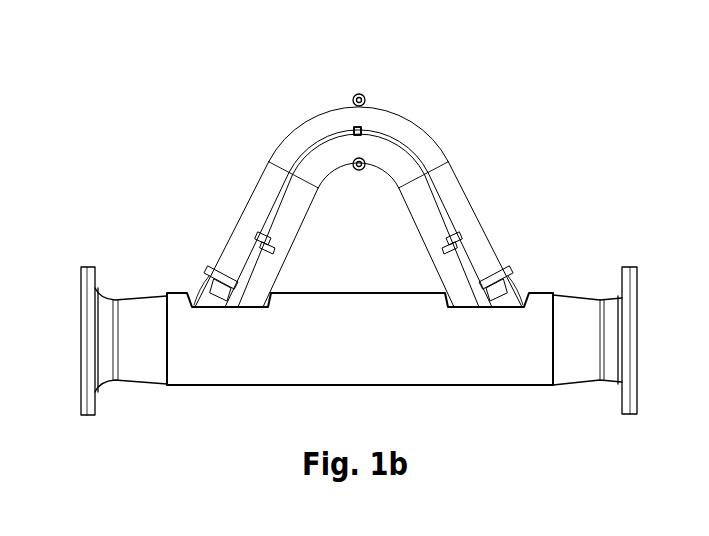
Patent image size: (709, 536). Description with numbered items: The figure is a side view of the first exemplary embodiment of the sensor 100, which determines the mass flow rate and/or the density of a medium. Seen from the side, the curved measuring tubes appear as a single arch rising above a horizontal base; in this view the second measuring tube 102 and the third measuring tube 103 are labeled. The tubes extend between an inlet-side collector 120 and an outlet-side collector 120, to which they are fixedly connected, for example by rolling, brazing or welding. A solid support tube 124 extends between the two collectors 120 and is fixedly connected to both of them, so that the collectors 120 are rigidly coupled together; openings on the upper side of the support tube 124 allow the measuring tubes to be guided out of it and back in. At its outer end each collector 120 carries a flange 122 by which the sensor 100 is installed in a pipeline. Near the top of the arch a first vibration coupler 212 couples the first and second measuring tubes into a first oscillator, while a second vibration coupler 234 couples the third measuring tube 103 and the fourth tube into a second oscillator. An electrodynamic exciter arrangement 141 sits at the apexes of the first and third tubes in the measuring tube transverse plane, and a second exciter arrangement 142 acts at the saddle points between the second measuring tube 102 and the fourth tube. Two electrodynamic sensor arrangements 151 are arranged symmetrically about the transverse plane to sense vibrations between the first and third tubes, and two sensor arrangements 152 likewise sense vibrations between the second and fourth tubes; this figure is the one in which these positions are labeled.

The sensor 100 is at (156, 80).
The second measuring tube 102 is at (432, 217).
The third measuring tube 103 is at (440, 177).
The collector 120 is at (147, 372).
The flange 122 is at (93, 275).
The support tube 124 is at (280, 372).
The exciter arrangement 141 is at (366, 99).
The second exciter arrangement 142 is at (361, 170).
The sensor arrangement 151 is at (262, 231).
The sensor arrangement 152 is at (258, 243).
The first vibration coupler 212 is at (354, 131).
The second vibration coupler 234 is at (362, 131).